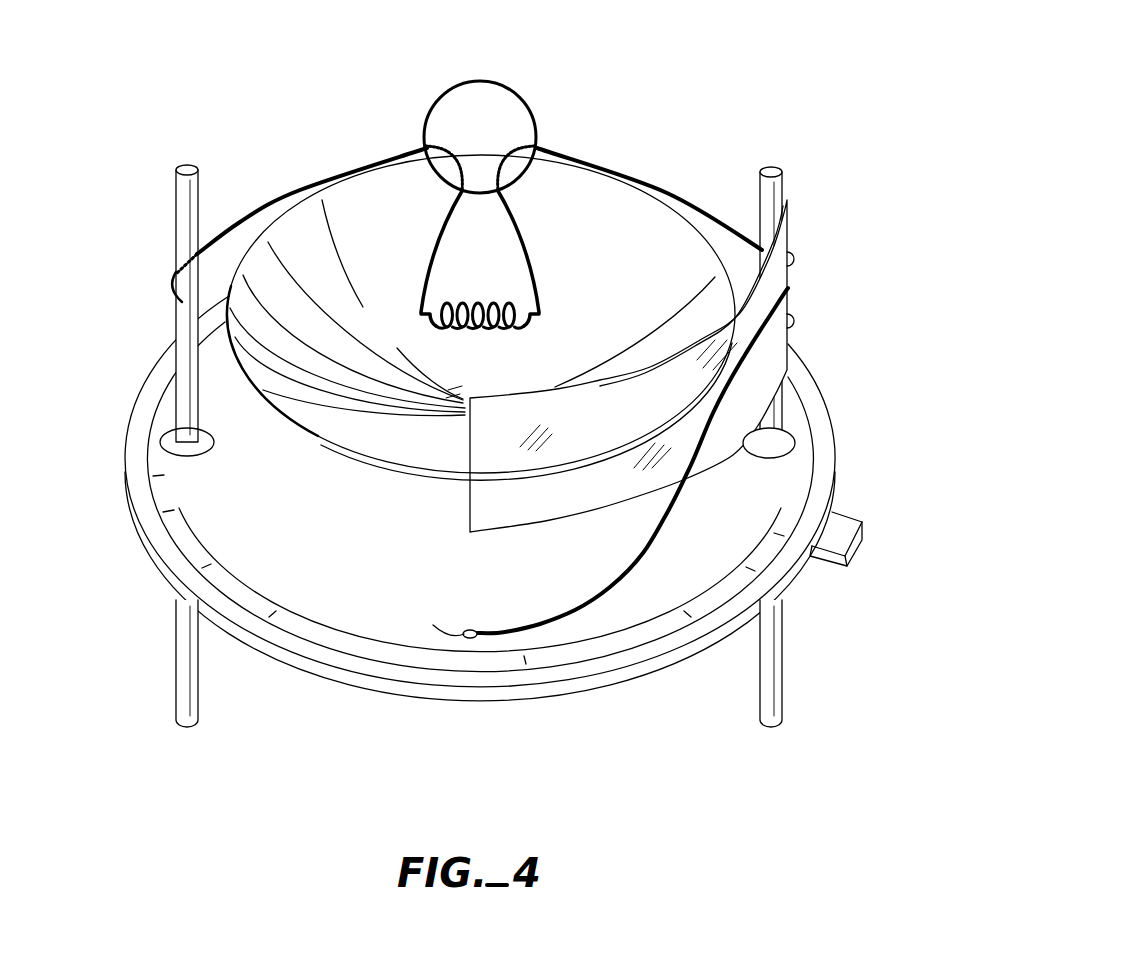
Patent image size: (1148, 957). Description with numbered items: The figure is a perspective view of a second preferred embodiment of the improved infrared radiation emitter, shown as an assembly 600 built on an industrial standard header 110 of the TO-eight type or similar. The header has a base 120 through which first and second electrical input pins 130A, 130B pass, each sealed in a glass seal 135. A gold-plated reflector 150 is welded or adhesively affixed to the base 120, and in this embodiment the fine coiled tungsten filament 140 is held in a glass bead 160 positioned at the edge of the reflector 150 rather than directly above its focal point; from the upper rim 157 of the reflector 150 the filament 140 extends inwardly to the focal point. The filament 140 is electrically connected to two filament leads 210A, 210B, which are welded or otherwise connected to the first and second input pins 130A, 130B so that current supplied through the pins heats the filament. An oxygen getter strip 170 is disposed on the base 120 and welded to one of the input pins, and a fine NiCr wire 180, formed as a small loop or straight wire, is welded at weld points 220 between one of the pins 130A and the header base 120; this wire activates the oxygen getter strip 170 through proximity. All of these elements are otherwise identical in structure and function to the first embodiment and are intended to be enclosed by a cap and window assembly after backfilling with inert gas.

The lamp assembly 600 is at (815, 75).
The header 110 is at (142, 572).
The base 120 is at (816, 467).
The first electrical input pin 130A is at (187, 222).
The second electrical input pin 130B is at (778, 183).
The glass seal 135 is at (157, 440).
The tungsten filament 140 is at (448, 338).
The reflector 150 is at (410, 472).
The upper rim 157 is at (305, 440).
The glass bead 160 is at (515, 82).
The oxygen getter strip 170 is at (790, 247).
The NiCr wire 180 is at (572, 616).
The first filament lead 210A is at (297, 187).
The second filament lead 210B is at (610, 165).
The weld point 220 is at (470, 640).